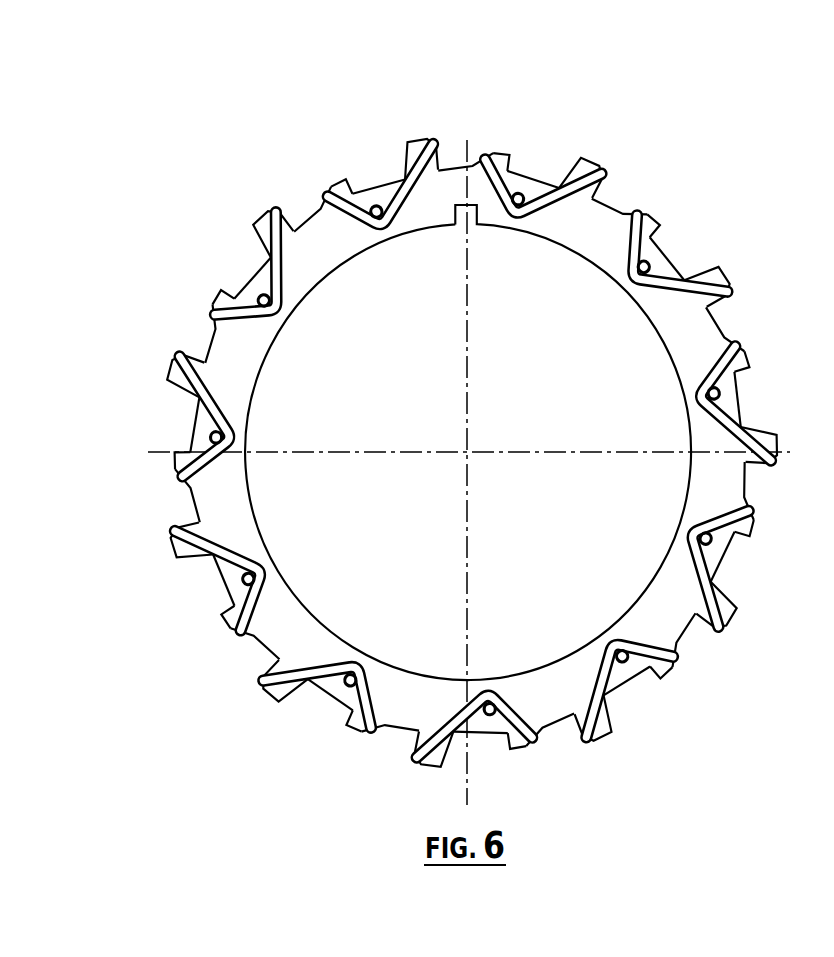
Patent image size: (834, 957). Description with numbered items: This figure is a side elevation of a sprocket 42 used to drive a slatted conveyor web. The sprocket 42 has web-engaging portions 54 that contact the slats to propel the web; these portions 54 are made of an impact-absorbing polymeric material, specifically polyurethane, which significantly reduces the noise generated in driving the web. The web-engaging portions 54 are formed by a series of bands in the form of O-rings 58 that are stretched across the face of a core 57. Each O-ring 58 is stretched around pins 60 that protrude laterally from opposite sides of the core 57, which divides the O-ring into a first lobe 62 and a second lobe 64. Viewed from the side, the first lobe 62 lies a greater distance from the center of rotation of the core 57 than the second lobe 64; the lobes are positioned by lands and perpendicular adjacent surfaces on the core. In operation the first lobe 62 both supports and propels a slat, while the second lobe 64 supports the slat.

The sprocket 42 is at (473, 424).
The web-engaging portions 54 is at (428, 135).
The core 57 is at (557, 238).
The O-rings 58 is at (560, 180).
The pins 60 is at (377, 204).
The first lobe 62 is at (548, 206).
The second lobe 64 is at (357, 230).